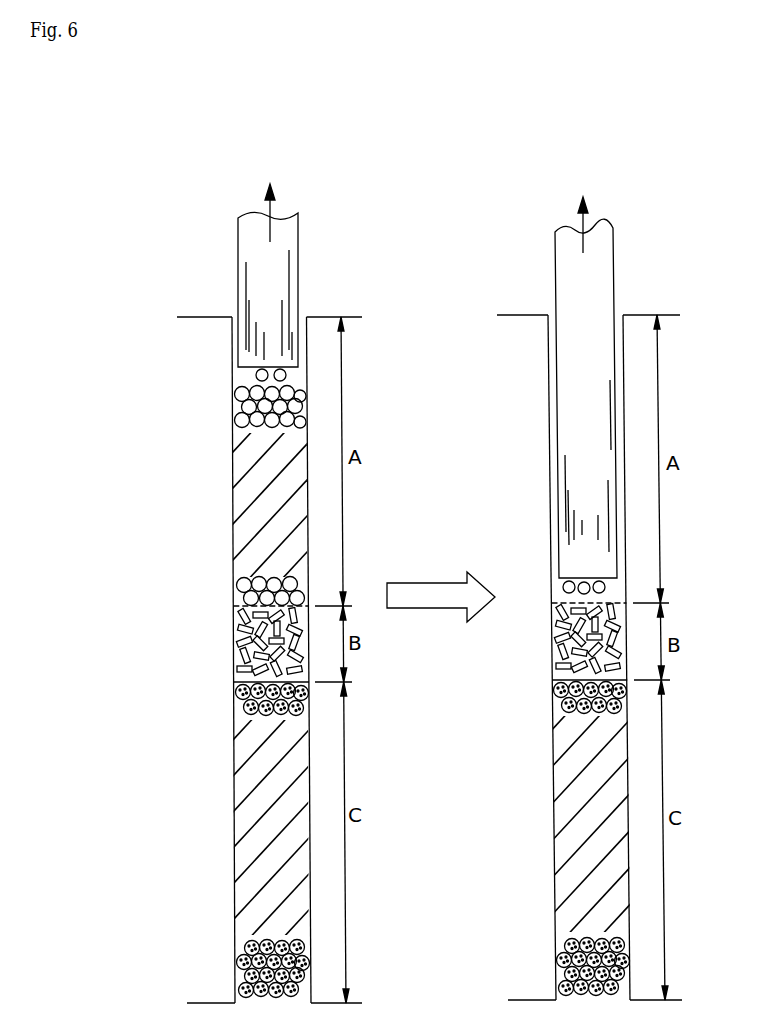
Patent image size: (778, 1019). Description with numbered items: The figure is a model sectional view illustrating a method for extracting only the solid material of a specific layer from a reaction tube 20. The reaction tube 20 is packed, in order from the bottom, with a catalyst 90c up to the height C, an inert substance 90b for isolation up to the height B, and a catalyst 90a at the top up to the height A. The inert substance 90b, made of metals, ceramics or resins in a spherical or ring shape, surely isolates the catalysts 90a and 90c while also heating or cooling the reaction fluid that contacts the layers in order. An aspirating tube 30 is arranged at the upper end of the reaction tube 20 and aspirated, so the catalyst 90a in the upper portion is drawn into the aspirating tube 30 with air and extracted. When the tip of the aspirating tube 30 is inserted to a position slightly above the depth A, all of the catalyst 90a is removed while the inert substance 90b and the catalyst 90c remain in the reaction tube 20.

The reaction tube 20 is at (238, 496).
The aspirating tube 30 is at (285, 259).
The catalyst 90a is at (237, 407).
The inert substance 90b is at (238, 643).
The catalyst 90c is at (240, 966).